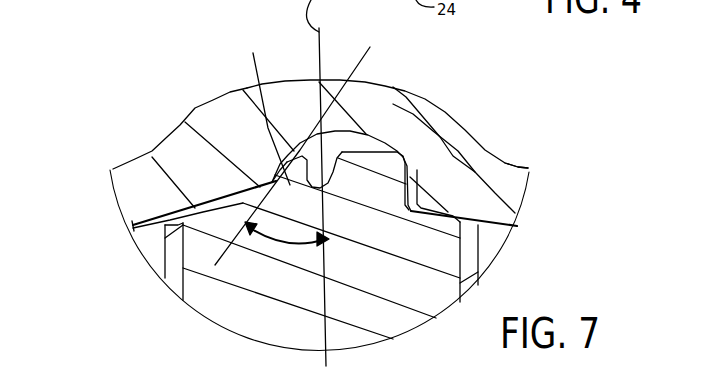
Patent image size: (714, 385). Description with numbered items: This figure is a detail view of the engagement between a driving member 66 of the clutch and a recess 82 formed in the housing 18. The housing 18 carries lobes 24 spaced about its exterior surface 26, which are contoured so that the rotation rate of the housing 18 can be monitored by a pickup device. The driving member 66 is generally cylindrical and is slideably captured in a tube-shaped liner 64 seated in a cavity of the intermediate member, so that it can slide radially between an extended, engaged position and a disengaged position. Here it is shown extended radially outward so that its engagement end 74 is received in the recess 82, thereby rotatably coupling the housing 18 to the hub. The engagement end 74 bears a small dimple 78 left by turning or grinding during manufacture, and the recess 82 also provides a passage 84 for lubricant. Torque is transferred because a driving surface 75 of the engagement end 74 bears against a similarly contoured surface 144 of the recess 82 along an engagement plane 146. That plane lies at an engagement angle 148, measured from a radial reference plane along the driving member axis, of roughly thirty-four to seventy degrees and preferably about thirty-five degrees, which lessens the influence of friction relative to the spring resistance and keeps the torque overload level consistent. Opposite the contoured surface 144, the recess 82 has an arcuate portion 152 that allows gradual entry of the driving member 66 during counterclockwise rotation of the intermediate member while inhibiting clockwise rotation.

The housing 18 is at (146, 146).
The lobes 24 is at (206, 100).
The exterior surface 26 is at (523, 166).
The liner 64 is at (172, 265).
The driving member 66 is at (254, 321).
The engagement end 74 is at (422, 100).
The driving surface 75 is at (278, 183).
The dimple 78 is at (309, 168).
The recess 82 is at (420, 163).
The passage 84 is at (375, 140).
The contoured surface 144 is at (268, 100).
The engagement plane 146 is at (357, 66).
The engagement angle 148 is at (272, 244).
The arcuate portion 152 is at (418, 191).